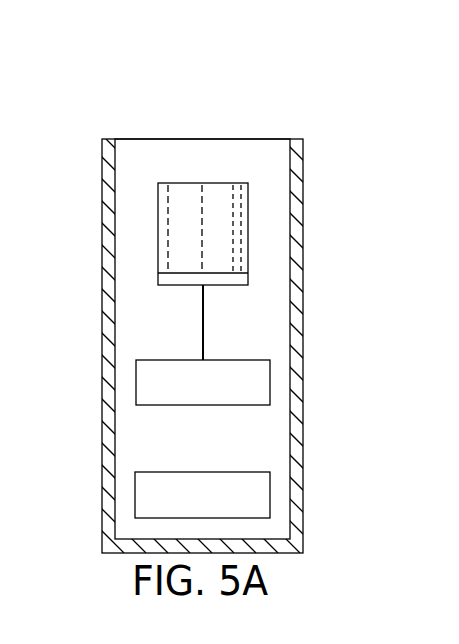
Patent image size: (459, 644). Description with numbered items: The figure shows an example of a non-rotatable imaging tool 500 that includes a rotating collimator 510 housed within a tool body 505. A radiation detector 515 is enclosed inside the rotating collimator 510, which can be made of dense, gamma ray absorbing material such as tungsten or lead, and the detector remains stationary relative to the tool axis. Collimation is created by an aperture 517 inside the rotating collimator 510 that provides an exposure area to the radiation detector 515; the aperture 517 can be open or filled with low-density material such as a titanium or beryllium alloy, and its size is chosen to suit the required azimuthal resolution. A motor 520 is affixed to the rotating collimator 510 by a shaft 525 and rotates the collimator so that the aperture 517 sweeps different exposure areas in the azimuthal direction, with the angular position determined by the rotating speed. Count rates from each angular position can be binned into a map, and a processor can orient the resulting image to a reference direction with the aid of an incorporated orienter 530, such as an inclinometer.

The non-rotatable imaging tool 500 is at (102, 72).
The tool body 505 is at (102, 153).
The rotating collimator 510 is at (163, 293).
The radiation detector 515 is at (180, 183).
The aperture 517 is at (203, 197).
The motor 520 is at (167, 406).
The shaft 525 is at (205, 322).
The orienter 530 is at (235, 472).